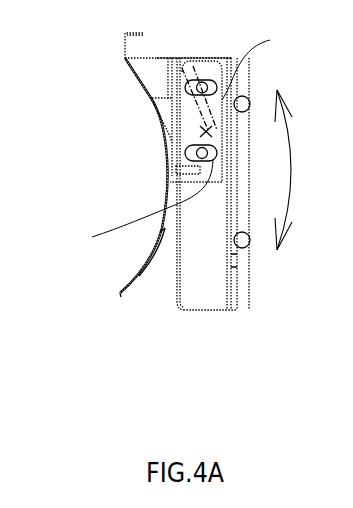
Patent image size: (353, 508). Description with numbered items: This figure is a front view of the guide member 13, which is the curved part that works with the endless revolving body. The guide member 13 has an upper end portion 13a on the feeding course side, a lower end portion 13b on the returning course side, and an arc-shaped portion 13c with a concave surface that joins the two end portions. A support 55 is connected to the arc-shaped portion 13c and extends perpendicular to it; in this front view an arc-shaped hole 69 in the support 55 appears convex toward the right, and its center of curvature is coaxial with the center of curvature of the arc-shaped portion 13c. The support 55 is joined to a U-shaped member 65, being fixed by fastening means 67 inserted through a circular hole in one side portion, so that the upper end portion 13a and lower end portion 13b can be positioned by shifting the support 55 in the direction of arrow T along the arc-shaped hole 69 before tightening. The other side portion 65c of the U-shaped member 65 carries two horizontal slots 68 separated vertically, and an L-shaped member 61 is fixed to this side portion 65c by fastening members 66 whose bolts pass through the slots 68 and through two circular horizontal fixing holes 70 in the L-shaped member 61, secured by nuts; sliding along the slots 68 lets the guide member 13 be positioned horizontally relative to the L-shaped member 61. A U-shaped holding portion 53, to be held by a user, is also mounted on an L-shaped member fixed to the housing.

The guide member 13 is at (130, 175).
The upper end portion 13a is at (125, 33).
The lower end portion 13b is at (128, 284).
The arc-shaped portion 13c is at (168, 182).
The U-shaped holding portion 53 is at (245, 248).
The support 55 is at (158, 58).
The L-shaped member 61 is at (205, 295).
The U-shaped member 65 is at (99, 297).
The side portion 65c is at (160, 232).
The fastening members 66 is at (180, 139).
The fastening means 67 is at (234, 118).
The horizontal slots 68 is at (186, 88).
The arc-shaped hole 69 is at (186, 68).
The horizontal fixing holes 70 is at (352, 196).
The arrow T is at (289, 170).